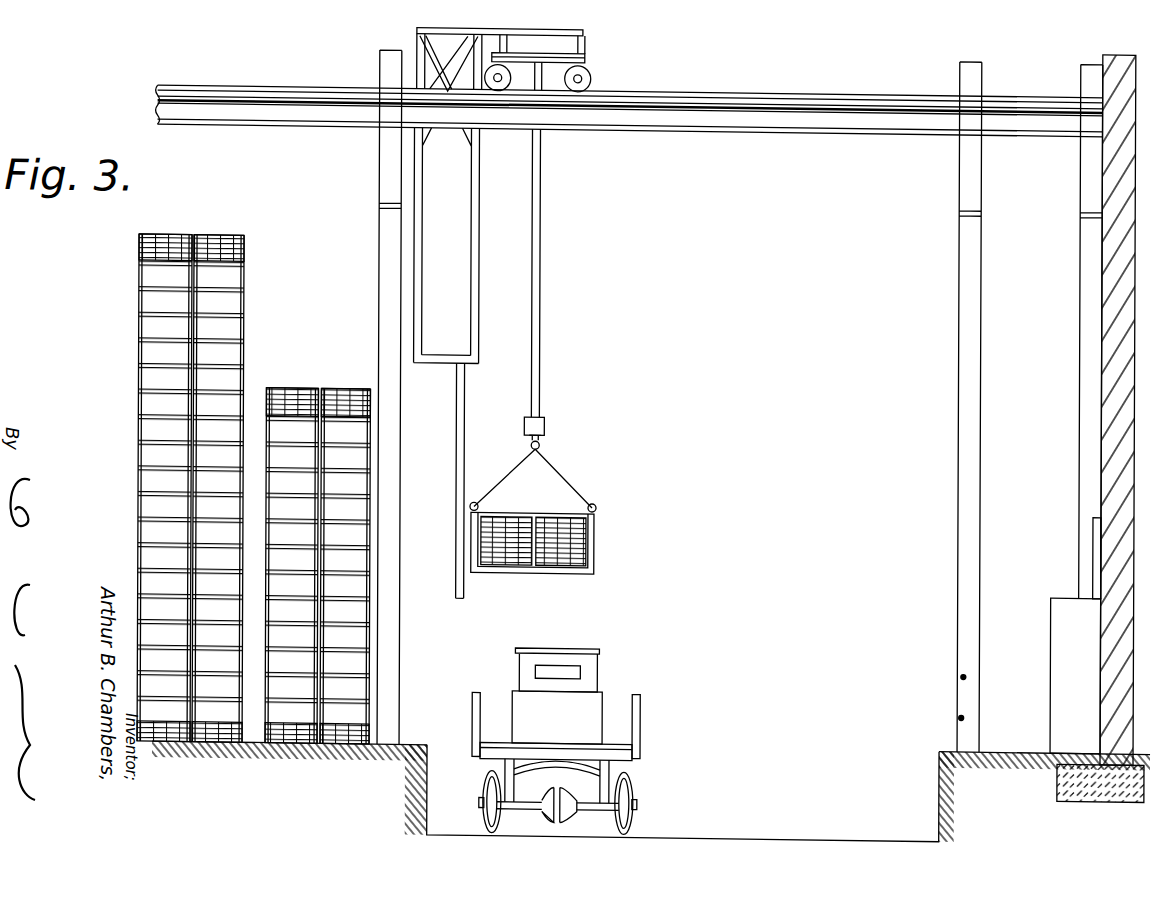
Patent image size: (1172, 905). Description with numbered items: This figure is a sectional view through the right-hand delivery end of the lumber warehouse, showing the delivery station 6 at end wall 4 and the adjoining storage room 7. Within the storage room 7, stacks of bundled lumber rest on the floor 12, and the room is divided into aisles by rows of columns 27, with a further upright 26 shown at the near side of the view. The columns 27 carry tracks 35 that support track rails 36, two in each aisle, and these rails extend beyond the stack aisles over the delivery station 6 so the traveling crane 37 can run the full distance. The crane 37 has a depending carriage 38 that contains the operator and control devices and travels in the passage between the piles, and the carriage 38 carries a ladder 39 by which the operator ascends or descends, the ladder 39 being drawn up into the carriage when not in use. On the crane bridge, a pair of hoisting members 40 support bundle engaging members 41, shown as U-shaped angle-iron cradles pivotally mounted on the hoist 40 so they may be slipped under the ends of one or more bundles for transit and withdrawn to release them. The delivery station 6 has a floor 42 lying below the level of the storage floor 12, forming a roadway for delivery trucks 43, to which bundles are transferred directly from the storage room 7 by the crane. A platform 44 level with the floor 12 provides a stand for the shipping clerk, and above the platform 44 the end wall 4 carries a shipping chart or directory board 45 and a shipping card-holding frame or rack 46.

The end wall 4 is at (1128, 417).
The delivery station 6 is at (565, 513).
The storage room 7 is at (254, 489).
The floor 12 is at (253, 745).
The column 26 is at (389, 383).
The columns 27 is at (960, 474).
The tracks 35 is at (683, 122).
The track rails 36 is at (682, 84).
The traveling crane 37 is at (588, 47).
The carriage 38 is at (498, 196).
The ladder 39 is at (460, 409).
The hoisting members 40 is at (545, 438).
The bundle engaging members 41 is at (592, 552).
The floor 42 is at (679, 793).
The delivery truck 43 is at (603, 680).
The platform 44 is at (1010, 738).
The shipping chart 45 is at (1097, 536).
The shipping card-holding frame 46 is at (1056, 608).